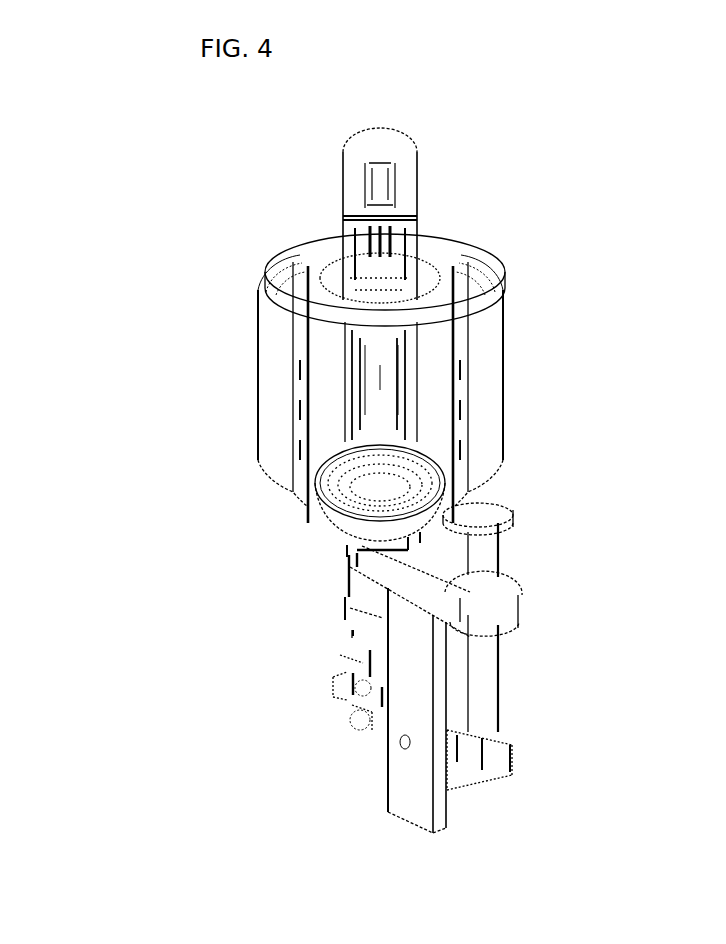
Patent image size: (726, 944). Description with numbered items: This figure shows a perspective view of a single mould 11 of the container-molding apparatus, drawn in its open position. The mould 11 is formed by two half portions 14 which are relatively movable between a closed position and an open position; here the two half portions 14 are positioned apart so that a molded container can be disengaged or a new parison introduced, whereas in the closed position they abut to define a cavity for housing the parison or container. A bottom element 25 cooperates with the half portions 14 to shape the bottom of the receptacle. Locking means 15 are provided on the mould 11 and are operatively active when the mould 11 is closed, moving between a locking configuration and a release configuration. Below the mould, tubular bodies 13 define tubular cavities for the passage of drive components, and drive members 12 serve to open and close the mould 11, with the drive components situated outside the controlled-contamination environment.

The mould 11 is at (613, 286).
The drive members 12 is at (505, 677).
The tubular bodies 13 is at (503, 555).
The half portions 14 is at (275, 390).
The locking means 15 is at (430, 246).
The bottom element 25 is at (387, 343).